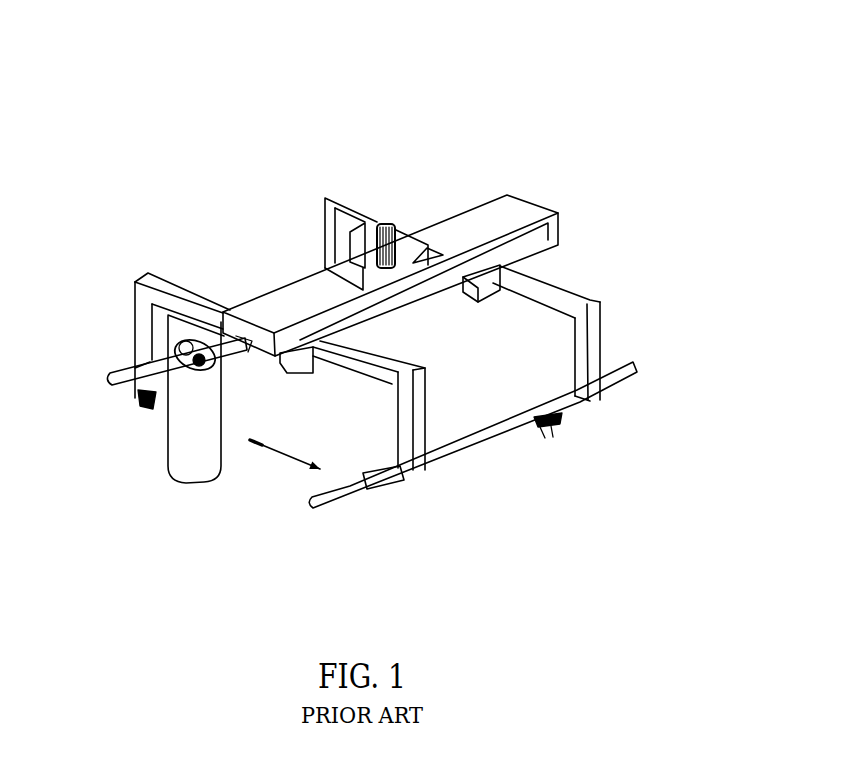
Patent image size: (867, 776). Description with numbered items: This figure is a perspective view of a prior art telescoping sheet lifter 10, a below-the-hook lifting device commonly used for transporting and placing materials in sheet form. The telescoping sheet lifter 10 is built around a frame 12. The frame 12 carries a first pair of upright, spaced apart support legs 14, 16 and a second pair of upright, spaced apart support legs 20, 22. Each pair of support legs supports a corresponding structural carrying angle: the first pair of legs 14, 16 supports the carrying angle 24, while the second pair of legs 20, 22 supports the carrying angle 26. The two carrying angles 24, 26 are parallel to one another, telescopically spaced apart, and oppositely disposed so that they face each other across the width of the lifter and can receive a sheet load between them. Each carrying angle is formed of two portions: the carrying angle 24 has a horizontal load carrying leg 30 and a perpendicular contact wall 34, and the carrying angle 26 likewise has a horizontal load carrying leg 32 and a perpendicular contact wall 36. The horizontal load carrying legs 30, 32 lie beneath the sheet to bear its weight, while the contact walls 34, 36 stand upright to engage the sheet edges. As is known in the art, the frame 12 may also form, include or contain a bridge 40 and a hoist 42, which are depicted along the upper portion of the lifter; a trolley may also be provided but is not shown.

The telescoping sheet lifter 10 is at (684, 185).
The frame 12 is at (182, 216).
The support leg 14 is at (138, 326).
The support leg 16 is at (322, 246).
The support leg 20 is at (418, 400).
The support leg 22 is at (579, 294).
The carrying angle 24 is at (146, 395).
The carrying angle 26 is at (554, 418).
The horizontal load carrying leg 30 is at (122, 400).
The horizontal load carrying leg 32 is at (352, 486).
The contact wall 34 is at (109, 369).
The contact wall 36 is at (375, 473).
The bridge 40 is at (455, 222).
The hoist 42 is at (382, 226).